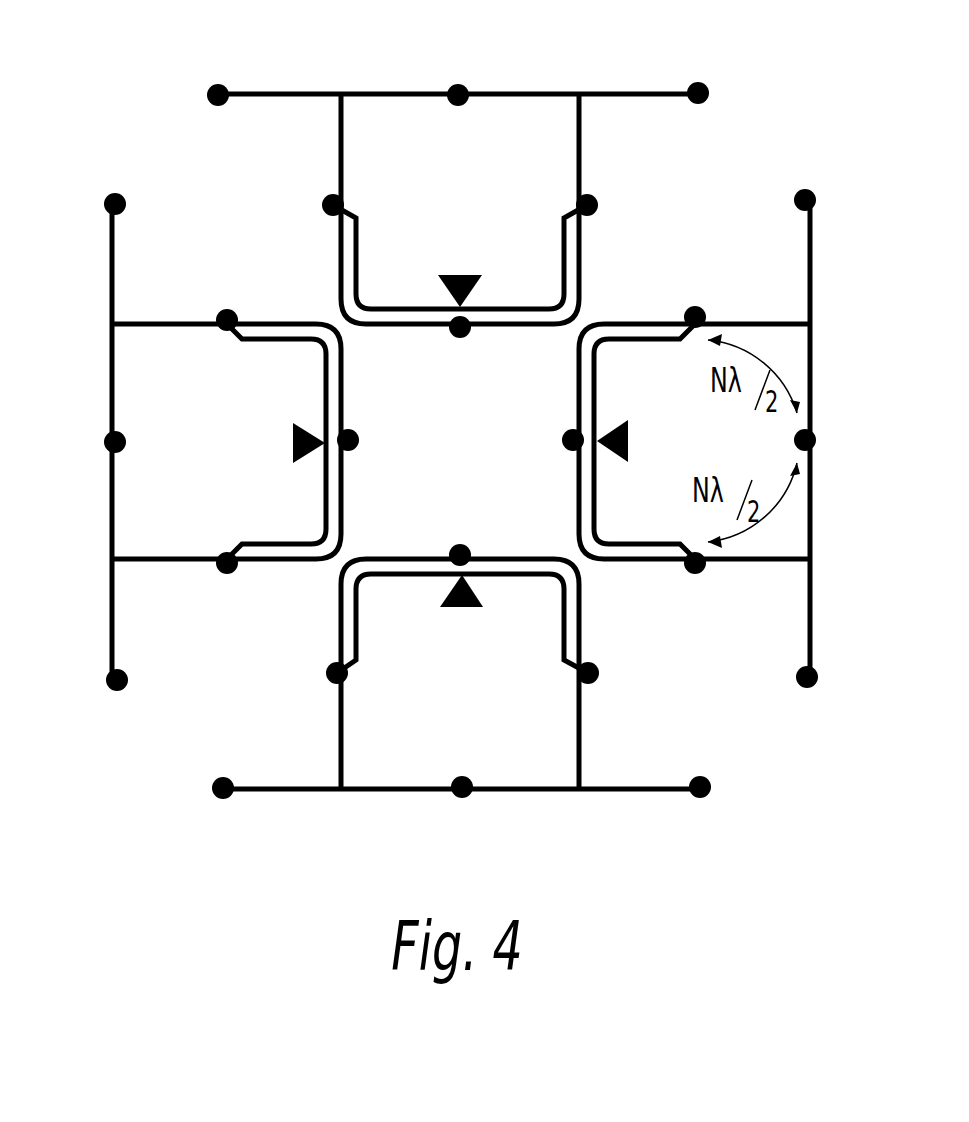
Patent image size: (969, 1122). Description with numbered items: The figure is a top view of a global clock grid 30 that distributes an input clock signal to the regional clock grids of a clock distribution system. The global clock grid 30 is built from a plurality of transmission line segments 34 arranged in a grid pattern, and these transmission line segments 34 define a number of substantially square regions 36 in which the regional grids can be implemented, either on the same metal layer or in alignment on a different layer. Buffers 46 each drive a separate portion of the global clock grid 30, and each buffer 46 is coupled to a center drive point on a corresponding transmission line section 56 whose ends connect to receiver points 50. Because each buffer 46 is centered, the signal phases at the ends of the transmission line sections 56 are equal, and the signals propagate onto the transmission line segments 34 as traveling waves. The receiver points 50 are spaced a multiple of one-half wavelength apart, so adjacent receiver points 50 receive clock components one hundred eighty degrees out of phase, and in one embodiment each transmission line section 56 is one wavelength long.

The global clock grid 30 is at (97, 43).
The transmission line segments 34 is at (297, 90).
The square regions 36 is at (193, 214).
The buffers 46 is at (478, 287).
The receiver points 50 is at (461, 440).
The transmission line sections 56 is at (382, 305).